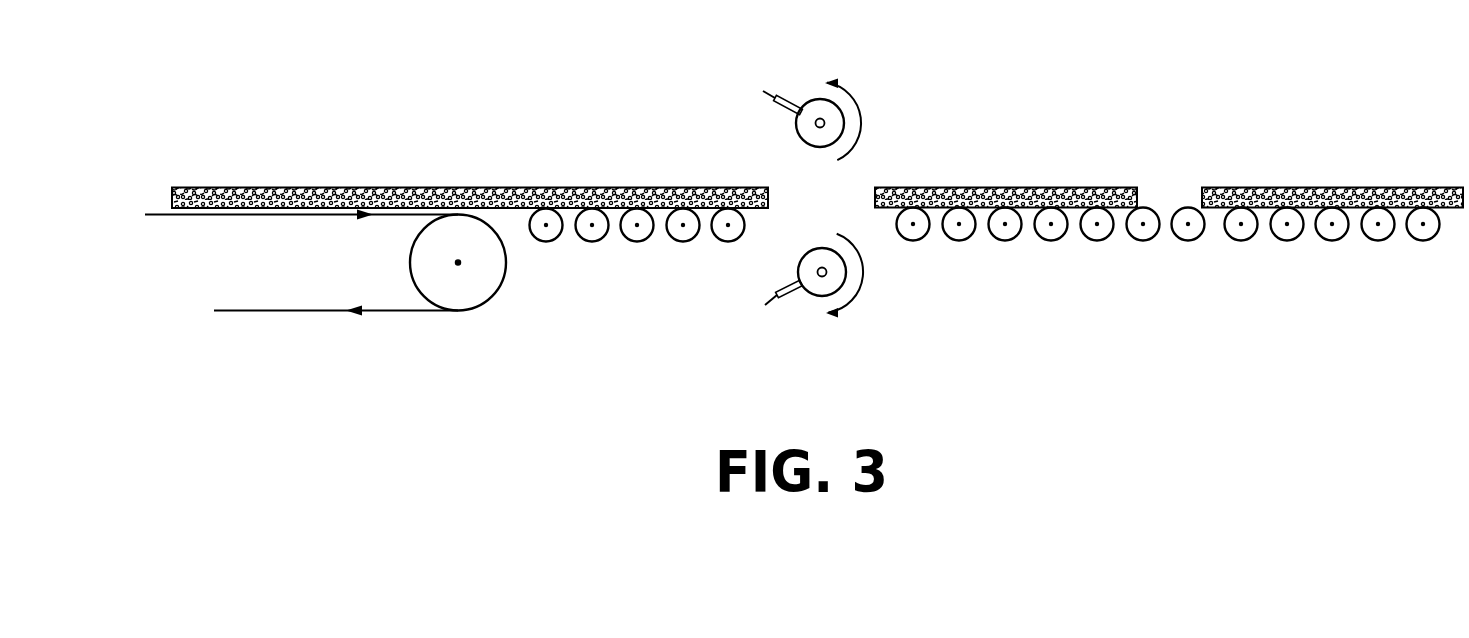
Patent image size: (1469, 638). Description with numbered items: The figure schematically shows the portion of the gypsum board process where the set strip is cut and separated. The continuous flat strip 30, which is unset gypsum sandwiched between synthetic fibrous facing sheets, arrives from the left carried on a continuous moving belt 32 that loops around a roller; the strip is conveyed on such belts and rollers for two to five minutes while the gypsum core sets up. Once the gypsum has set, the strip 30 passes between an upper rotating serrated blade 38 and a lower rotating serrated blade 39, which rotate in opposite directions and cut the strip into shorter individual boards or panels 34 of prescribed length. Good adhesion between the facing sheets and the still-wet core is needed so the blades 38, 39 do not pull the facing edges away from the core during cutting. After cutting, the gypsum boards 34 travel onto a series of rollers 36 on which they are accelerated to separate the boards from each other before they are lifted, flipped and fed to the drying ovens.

The continuous flat strip 30 is at (418, 186).
The continuous moving belt 32 is at (303, 315).
The gypsum board 34 is at (996, 187).
The rollers 36 is at (1448, 245).
The rotating serrated blade 38 is at (757, 76).
The rotating serrated blade 39 is at (759, 323).